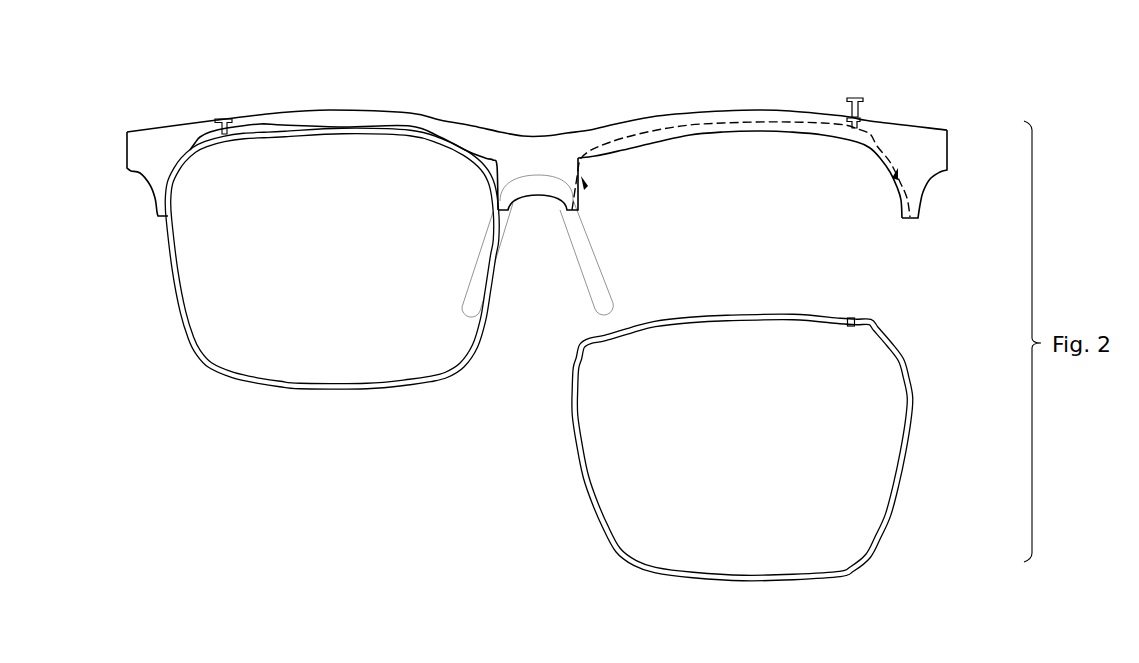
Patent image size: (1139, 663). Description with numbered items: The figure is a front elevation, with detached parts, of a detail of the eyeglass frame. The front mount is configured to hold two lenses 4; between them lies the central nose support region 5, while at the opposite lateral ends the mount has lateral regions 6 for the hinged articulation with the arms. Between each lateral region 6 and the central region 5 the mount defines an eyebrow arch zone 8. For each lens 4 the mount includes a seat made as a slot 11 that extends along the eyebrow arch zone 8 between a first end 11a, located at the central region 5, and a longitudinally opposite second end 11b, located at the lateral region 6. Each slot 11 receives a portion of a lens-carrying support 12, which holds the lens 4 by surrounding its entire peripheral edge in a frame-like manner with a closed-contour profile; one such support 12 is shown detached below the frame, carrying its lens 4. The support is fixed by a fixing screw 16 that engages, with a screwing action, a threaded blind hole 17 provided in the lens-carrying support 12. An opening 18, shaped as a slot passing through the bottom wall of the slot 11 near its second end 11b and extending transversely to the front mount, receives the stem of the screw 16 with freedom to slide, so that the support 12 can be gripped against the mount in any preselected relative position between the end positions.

The lens 4 is at (529, 354).
The central nose support region 5 is at (536, 150).
The lateral region 6 is at (150, 140).
The eyebrow arch zone 8 is at (328, 110).
The slot 11 is at (630, 142).
The first end 11a is at (585, 184).
The second end 11b is at (895, 176).
The lens-carrying support 12 is at (213, 378).
The fixing screw 16 is at (856, 90).
The threaded blind hole 17 is at (856, 318).
The opening 18 is at (852, 129).